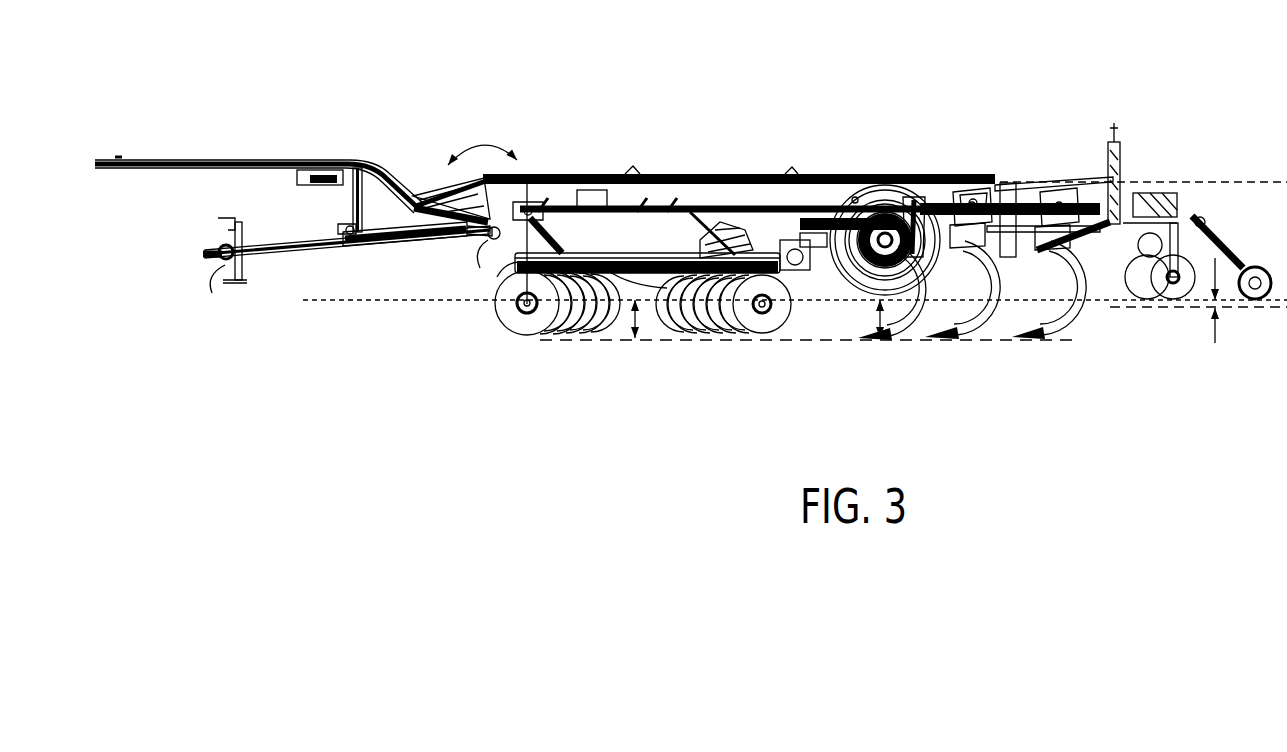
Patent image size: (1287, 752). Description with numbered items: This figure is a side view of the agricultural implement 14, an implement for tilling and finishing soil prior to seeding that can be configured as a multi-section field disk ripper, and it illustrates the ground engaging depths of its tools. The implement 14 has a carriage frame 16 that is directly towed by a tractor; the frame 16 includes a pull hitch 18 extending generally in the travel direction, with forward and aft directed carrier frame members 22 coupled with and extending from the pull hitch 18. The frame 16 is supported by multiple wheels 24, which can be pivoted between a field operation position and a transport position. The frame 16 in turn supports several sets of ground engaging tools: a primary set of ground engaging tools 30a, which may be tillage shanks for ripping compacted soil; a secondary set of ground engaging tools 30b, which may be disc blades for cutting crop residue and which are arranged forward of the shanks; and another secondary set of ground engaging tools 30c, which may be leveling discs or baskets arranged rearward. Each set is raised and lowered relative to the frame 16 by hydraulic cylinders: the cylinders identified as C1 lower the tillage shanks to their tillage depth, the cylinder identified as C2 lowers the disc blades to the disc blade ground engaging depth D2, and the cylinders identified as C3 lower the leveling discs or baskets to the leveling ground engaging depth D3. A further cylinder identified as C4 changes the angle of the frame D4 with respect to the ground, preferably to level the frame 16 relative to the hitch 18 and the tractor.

The agricultural implement 14 is at (218, 70).
The carriage frame 16 is at (414, 150).
The pull hitch 18 is at (290, 250).
The carrier frame members 22 is at (706, 196).
The wheels 24 is at (850, 272).
The primary set of ground engaging tools 30a is at (979, 357).
The secondary set of ground engaging tools 30b is at (697, 357).
The secondary set of ground engaging tools 30c is at (1150, 325).
The cylinder for primary ground engaging tools C1 is at (853, 196).
The cylinder for disc blades C2 is at (512, 236).
The cylinder for leveling discs or baskets C3 is at (1143, 228).
The frame angle cylinder C4 is at (380, 236).
The disc blade ground engaging depth D2 is at (634, 322).
The leveling ground engaging depth D3 is at (1217, 333).
The angle of the frame D4 is at (482, 140).